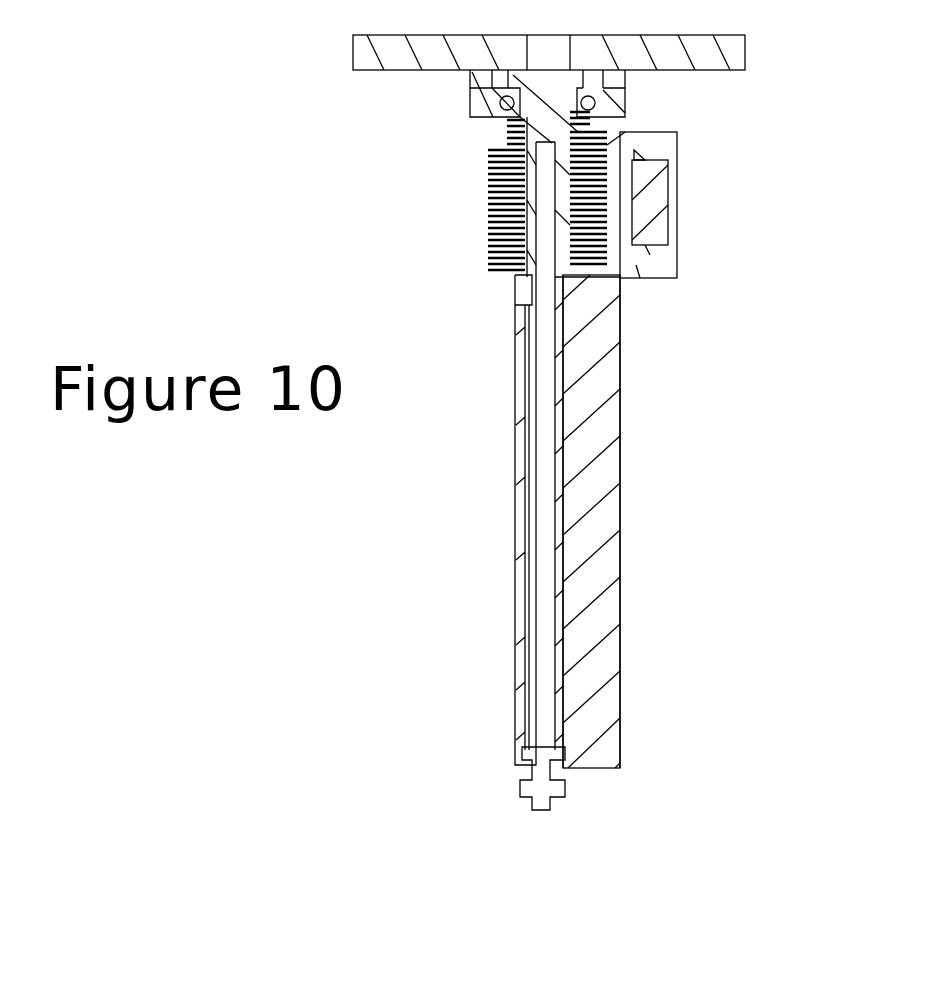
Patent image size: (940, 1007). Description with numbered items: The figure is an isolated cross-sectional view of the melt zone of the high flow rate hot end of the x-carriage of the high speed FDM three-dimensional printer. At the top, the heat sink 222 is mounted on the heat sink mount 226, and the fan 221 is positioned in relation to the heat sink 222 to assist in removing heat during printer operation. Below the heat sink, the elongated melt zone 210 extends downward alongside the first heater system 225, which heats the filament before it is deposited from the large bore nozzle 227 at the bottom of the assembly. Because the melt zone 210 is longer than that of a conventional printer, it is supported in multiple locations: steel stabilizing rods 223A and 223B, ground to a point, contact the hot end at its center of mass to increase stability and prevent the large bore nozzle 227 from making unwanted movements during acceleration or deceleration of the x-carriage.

The heat sink mount 226 is at (470, 90).
The heat sink 222 is at (488, 212).
The fan 221 is at (890, 192).
The steel stabilizing rod 223A is at (480, 358).
The steel stabilizing rod 223B is at (758, 337).
The first heater system 225 is at (620, 378).
The melt zone 210 is at (553, 468).
The large bore nozzle 227 is at (563, 800).